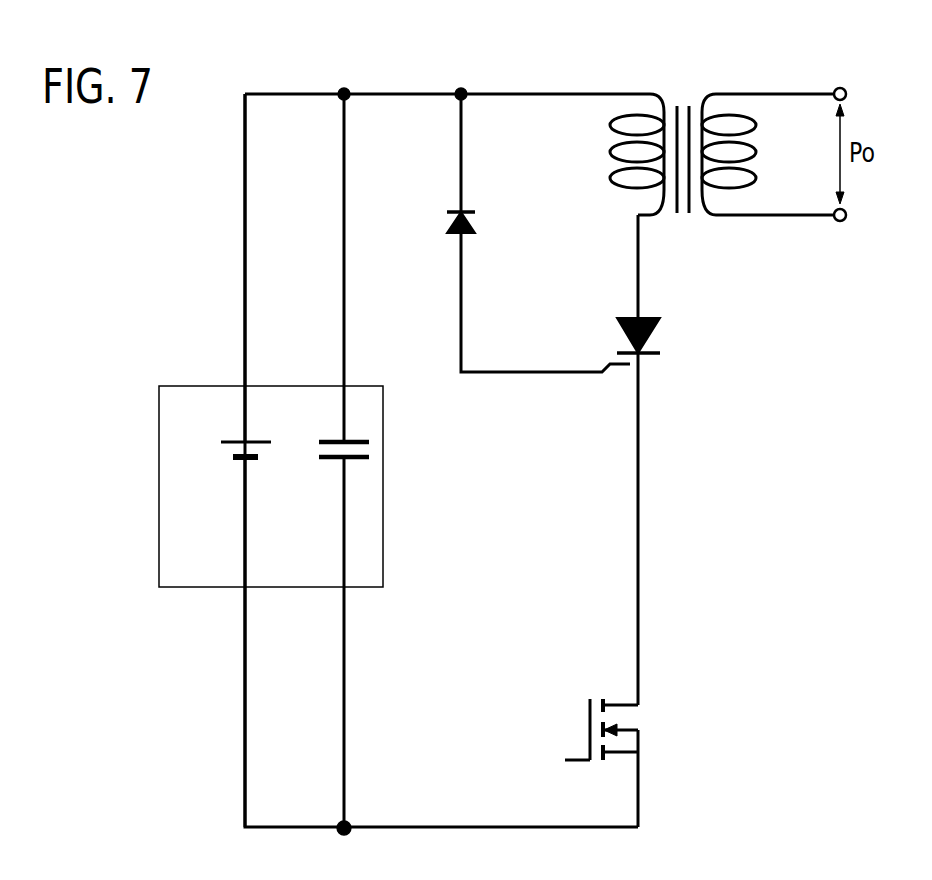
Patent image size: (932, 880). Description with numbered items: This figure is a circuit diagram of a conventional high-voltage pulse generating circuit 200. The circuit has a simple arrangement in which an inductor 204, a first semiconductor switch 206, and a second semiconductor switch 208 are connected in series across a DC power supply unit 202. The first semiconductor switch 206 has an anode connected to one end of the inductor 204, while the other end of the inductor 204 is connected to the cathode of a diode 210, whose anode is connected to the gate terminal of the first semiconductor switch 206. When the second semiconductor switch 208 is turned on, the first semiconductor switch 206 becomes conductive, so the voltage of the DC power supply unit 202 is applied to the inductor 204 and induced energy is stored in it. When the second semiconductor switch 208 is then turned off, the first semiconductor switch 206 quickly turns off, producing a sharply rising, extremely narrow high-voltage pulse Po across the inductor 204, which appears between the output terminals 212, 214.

The high-voltage pulse generating circuit 200 is at (137, 172).
The DC power supply unit 202 is at (385, 576).
The inductor 204 is at (686, 98).
The first semiconductor switch 206 is at (662, 337).
The second semiconductor switch 208 is at (632, 720).
The diode 210 is at (478, 219).
The output terminal 212 is at (847, 94).
The output terminal 214 is at (847, 215).